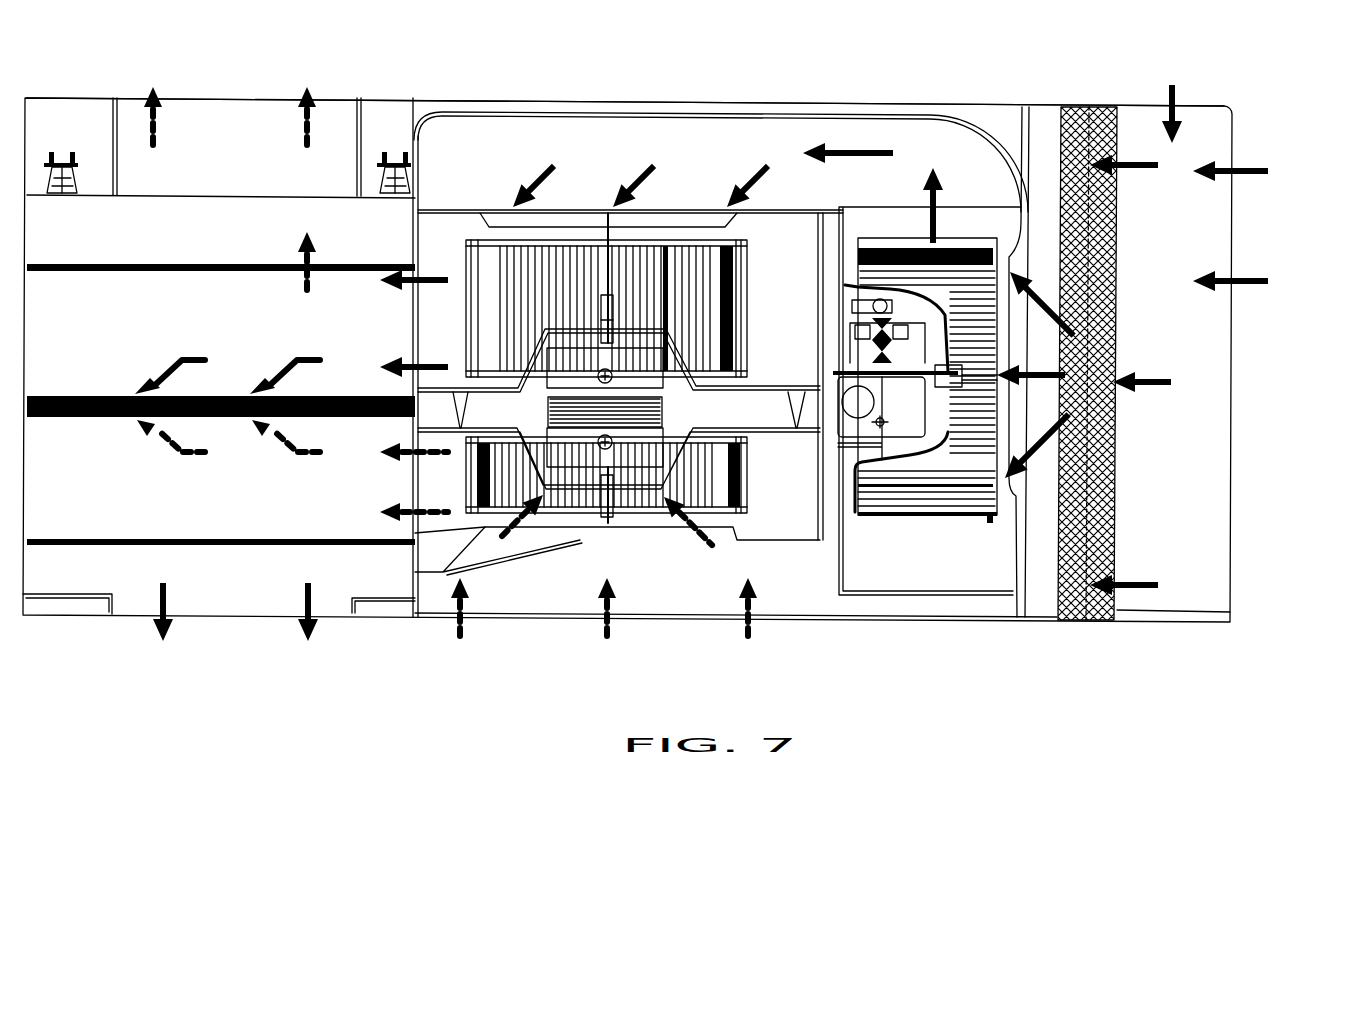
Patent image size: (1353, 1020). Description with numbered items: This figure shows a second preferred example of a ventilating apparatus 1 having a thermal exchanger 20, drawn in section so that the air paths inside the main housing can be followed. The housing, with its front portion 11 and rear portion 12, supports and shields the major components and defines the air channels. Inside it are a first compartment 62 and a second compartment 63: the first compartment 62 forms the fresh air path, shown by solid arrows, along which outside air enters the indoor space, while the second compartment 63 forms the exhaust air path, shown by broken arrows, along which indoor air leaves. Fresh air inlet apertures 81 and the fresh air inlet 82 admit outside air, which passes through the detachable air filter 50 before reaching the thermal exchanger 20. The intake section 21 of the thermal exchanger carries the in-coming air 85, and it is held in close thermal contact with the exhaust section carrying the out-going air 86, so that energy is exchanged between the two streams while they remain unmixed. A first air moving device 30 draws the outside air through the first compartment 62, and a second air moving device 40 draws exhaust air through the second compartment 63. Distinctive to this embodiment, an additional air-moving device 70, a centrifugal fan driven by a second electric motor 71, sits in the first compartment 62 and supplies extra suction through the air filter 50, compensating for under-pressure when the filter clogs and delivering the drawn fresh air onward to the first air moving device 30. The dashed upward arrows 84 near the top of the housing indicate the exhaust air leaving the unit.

The ventilating apparatus 1 is at (1250, 78).
The front portion 11 is at (978, 625).
The rear portion 12 is at (597, 100).
The thermal exchanger 20 is at (107, 347).
The intake section 21 is at (426, 342).
The first air moving device 30 is at (740, 270).
The second air moving device 40 is at (730, 463).
The air filter 50 is at (1088, 622).
The first compartment 62 is at (712, 166).
The second compartment 63 is at (800, 534).
The additional air-moving device 70 is at (885, 505).
The second electric motor 71 is at (881, 379).
The fresh air inlet apertures 81 is at (1290, 374).
The fresh air inlet 82 is at (325, 650).
The exhaust air flow 84 is at (352, 85).
The in-coming air 85 is at (205, 360).
The out-going air 86 is at (300, 145).